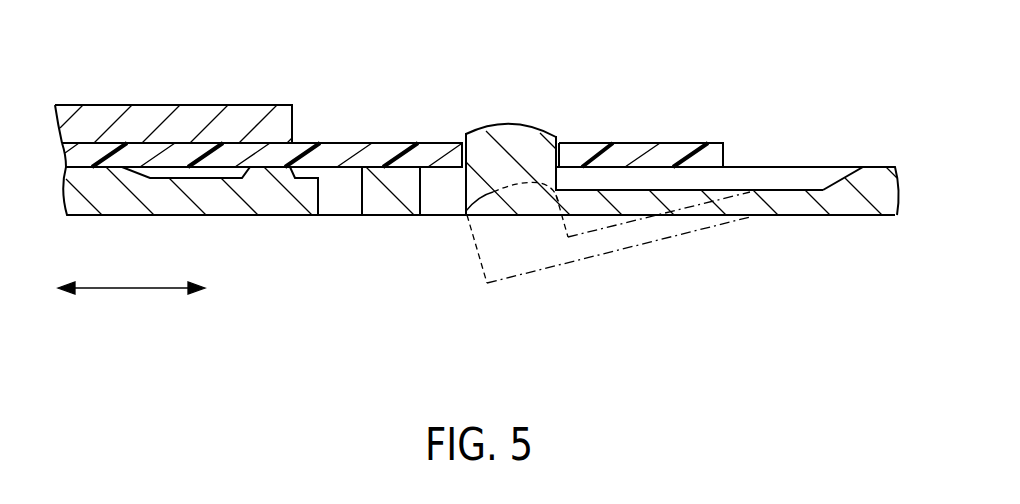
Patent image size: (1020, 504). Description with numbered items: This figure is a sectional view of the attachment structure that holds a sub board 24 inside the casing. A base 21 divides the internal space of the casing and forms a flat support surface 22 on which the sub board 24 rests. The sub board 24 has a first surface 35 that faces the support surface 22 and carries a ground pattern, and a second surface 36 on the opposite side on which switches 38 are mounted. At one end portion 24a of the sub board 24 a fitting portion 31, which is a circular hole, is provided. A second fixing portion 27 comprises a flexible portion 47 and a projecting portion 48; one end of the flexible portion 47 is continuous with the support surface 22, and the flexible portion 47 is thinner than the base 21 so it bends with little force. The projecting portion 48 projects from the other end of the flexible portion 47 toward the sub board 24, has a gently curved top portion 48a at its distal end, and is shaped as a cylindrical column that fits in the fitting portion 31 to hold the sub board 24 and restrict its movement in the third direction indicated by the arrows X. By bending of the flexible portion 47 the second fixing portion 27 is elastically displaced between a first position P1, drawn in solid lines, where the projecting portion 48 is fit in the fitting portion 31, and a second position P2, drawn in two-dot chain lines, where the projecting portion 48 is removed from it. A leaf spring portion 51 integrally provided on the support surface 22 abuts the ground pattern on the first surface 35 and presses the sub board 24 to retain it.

The switch 38 is at (218, 104).
The support surface 22 is at (378, 143).
The fitting portion 31 is at (468, 156).
The top portion 48a is at (505, 125).
The projecting portion 48 is at (492, 193).
The second surface 36 is at (610, 143).
The sub board 24 is at (668, 143).
The one end portion 24a is at (727, 153).
The leaf spring portion 51 is at (258, 208).
The first surface 35 is at (340, 200).
The base 21 is at (391, 208).
The flexible portion 47 is at (677, 208).
The second fixing portion 27 is at (718, 233).
The first position P1 is at (536, 127).
The second position P2 is at (538, 272).
The arrows X is at (122, 290).